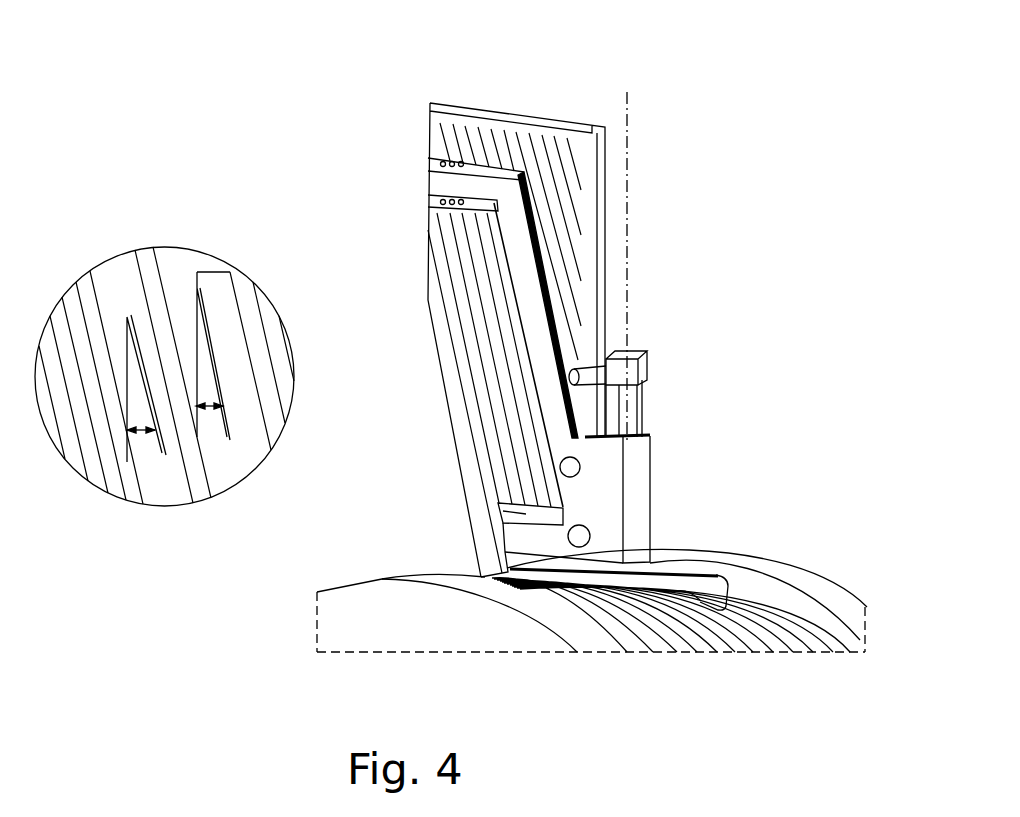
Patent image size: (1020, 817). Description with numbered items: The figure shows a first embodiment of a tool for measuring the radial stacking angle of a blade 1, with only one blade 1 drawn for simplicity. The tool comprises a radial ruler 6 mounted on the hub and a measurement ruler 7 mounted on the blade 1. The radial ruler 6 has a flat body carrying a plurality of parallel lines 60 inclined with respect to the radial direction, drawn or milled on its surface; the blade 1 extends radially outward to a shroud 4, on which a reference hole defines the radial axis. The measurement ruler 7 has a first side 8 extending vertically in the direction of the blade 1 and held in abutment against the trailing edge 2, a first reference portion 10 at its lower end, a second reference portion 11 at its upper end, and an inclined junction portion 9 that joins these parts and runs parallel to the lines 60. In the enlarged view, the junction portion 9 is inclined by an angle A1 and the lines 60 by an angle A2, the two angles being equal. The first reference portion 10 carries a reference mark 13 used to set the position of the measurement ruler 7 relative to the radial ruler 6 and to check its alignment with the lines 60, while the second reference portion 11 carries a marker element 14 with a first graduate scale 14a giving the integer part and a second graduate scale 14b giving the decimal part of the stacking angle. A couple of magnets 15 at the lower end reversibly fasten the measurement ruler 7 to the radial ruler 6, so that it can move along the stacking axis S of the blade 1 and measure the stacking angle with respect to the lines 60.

The blade 1 is at (714, 345).
The trailing edge 2 is at (643, 427).
The shroud 4 is at (648, 360).
The radial ruler 6 is at (416, 98).
The measurement ruler 7 is at (747, 202).
The first side 8 is at (637, 487).
The junction portion 9 is at (533, 283).
The first reference portion 10 is at (538, 545).
The second reference portion 11 is at (492, 190).
The reference mark 13 is at (520, 510).
The marker element 14 is at (318, 156).
The first graduate scale 14a is at (428, 197).
The second graduate scale 14b is at (430, 158).
The magnets 15 is at (567, 464).
The parallel lines 60 is at (127, 305).
The stacking axis S is at (628, 126).
The inclination angle of junction portion A1 is at (210, 415).
The inclination angle of lines A2 is at (140, 436).